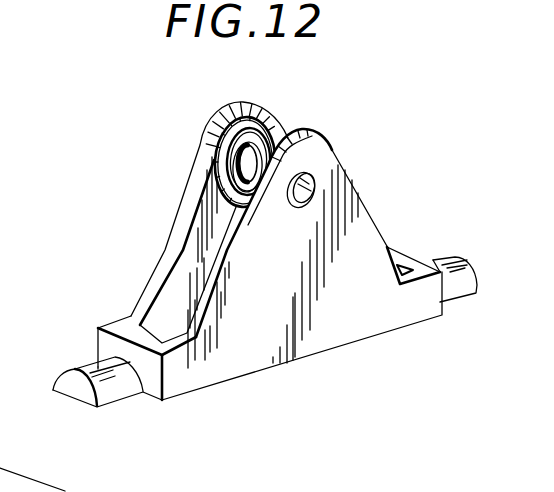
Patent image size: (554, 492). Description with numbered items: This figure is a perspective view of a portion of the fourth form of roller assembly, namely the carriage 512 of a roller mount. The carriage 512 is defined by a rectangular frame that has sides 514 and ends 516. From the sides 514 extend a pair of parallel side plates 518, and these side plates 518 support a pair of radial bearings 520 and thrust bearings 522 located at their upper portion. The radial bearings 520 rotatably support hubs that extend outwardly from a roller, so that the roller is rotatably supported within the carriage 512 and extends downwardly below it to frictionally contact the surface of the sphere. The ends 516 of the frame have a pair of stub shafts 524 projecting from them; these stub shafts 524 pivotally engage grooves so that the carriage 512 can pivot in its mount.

The carriage 512 is at (340, 346).
The sides 514 is at (186, 387).
The ends 516 is at (148, 390).
The side plates 518 is at (163, 244).
The radial bearings 520 is at (262, 137).
The thrust bearings 522 is at (250, 124).
The stub shafts 524 is at (77, 392).